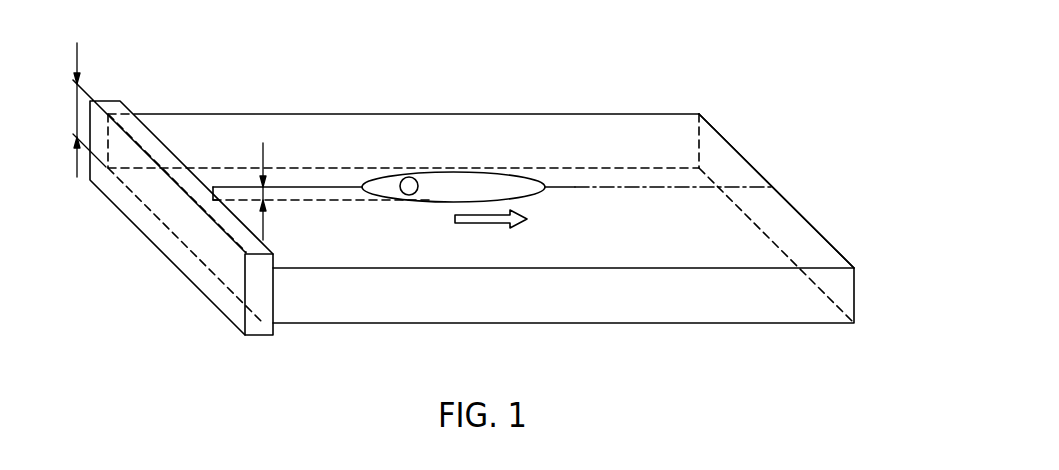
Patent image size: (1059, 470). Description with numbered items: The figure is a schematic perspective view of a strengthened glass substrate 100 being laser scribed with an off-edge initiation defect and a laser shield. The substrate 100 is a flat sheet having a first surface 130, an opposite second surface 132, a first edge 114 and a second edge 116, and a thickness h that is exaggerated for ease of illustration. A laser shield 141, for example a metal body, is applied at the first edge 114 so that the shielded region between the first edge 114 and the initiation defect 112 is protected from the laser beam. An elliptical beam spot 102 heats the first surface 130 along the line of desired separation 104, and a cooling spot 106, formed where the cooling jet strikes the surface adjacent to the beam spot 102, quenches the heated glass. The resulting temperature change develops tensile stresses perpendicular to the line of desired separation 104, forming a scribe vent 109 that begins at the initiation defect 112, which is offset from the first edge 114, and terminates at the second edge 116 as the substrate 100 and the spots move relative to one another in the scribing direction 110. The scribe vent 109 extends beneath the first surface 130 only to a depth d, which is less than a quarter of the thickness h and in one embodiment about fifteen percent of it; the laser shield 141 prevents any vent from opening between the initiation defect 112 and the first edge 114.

The strengthened glass substrate 100 is at (450, 202).
The elliptical beam spot 102 is at (513, 172).
The line of desired separation 104 is at (593, 189).
The cooling spot 106 is at (409, 177).
The scribe vent 109 is at (325, 187).
The scribing direction 110 is at (483, 225).
The initiation defect 112 is at (213, 187).
The first edge 114 is at (263, 302).
The second edge 116 is at (789, 203).
The first surface 130 is at (481, 244).
The second surface 132 is at (695, 323).
The laser shield 141 is at (192, 207).
The thickness h is at (77, 110).
The vent depth d is at (265, 152).